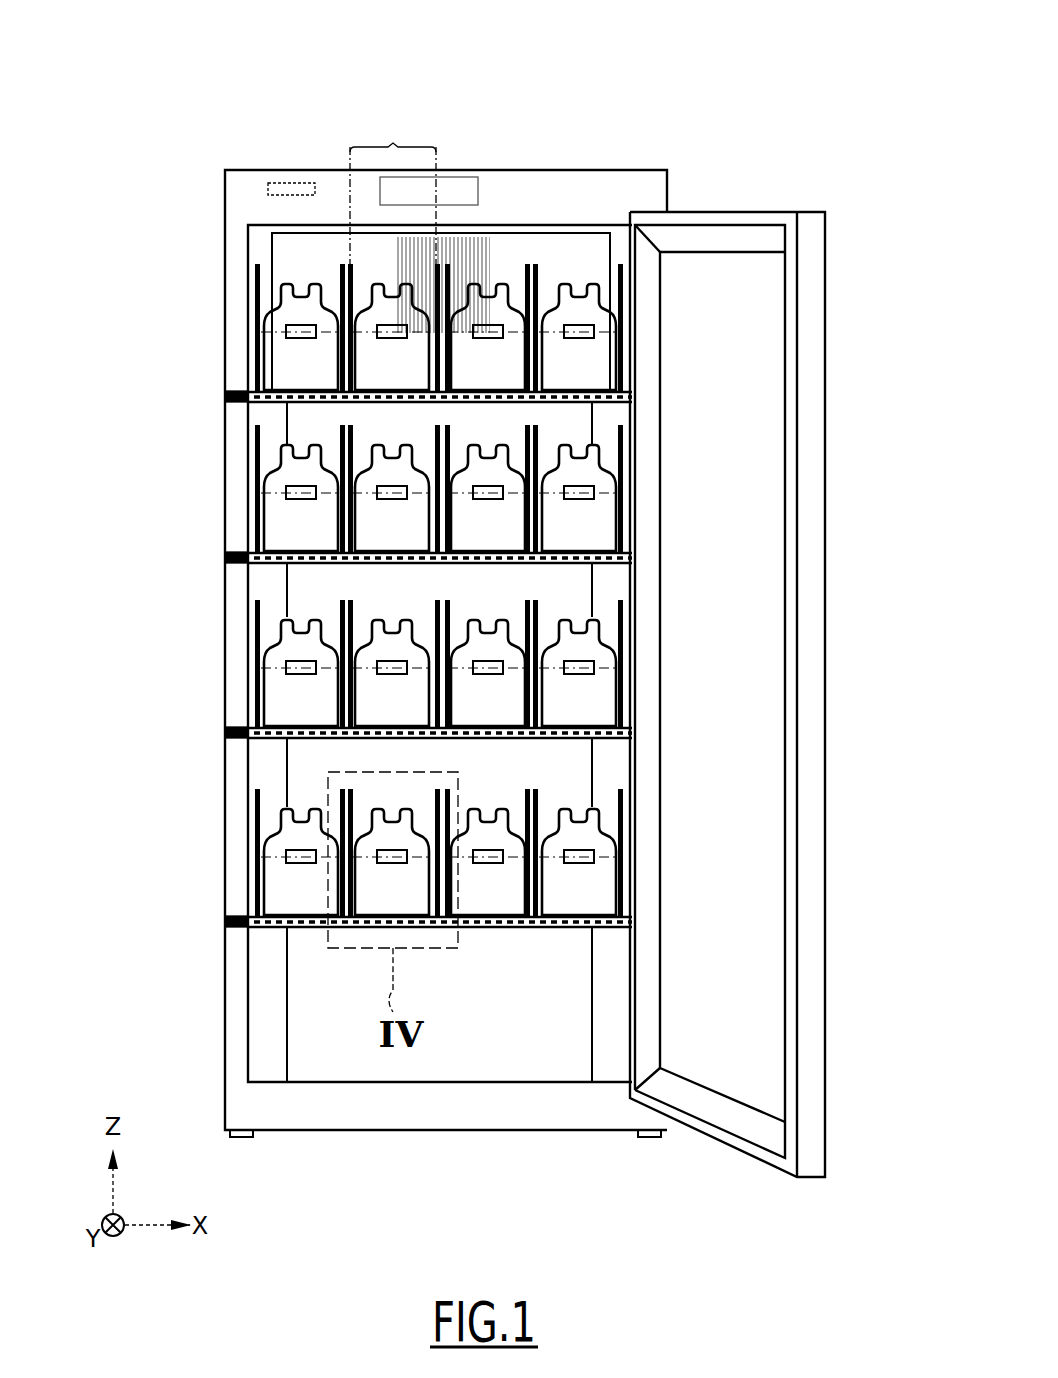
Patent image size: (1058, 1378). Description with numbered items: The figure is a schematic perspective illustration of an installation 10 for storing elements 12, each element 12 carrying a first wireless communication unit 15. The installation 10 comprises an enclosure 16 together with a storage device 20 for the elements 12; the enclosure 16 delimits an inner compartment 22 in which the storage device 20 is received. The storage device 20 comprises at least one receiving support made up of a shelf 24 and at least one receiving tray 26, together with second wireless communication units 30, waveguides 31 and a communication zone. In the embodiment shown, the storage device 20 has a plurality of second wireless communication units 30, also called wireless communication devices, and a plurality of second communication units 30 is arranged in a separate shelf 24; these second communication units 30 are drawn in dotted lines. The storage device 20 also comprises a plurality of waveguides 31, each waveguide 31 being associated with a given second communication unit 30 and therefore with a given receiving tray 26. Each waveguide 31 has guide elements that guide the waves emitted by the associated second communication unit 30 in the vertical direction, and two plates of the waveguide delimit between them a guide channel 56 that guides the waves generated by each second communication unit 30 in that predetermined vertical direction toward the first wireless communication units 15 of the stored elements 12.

The installation 10 is at (823, 65).
The element 12 is at (275, 295).
The first wireless communication unit 15 is at (602, 332).
The enclosure 16 is at (505, 131).
The storage device 20 is at (633, 383).
The inner compartment 22 is at (603, 262).
The shelf 24 is at (225, 395).
The receiving tray 26 is at (257, 349).
The second wireless communication unit 30 is at (517, 405).
The waveguide 31 is at (393, 184).
The guide channel 56 is at (520, 293).